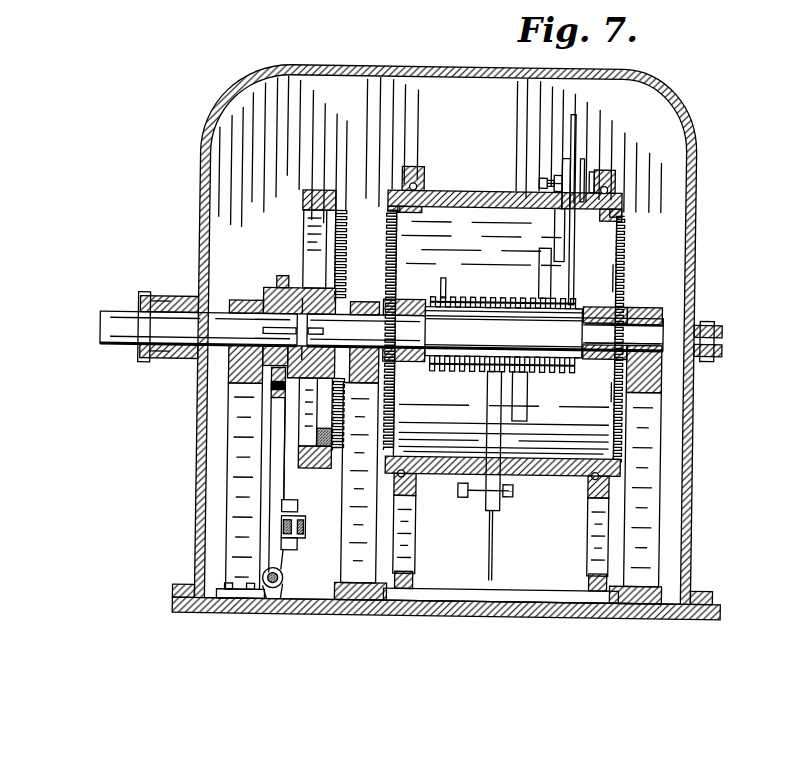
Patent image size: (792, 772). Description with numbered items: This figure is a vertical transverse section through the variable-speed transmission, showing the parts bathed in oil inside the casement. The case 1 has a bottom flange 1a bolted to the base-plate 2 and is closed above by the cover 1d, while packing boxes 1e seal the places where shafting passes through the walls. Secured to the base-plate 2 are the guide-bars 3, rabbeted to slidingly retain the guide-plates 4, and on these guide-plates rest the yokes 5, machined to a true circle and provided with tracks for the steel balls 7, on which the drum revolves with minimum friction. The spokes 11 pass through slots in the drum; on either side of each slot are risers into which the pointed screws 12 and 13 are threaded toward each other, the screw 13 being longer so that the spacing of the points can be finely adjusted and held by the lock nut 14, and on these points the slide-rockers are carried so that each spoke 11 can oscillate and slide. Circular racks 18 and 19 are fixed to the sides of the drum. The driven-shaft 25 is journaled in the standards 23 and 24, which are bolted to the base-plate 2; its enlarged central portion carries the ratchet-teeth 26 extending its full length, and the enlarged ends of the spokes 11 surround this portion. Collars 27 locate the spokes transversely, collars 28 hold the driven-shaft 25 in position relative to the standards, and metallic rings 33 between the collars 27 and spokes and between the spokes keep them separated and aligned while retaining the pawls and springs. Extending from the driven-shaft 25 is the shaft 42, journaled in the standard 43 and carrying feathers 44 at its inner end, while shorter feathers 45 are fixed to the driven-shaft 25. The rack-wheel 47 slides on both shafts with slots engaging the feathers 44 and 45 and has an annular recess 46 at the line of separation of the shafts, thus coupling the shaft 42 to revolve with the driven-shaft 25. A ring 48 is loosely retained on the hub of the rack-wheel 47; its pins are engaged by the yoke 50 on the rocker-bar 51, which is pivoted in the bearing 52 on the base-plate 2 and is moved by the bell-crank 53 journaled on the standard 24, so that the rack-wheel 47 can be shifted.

The case 1 is at (694, 422).
The bottom flange 1a is at (716, 601).
The cover 1d is at (694, 178).
The packing box 1e is at (147, 300).
The base-plate 2 is at (483, 617).
The guide-bar 3 is at (350, 601).
The guide-plate 4 is at (518, 600).
The yoke 5 is at (614, 174).
The steel ball 7 is at (423, 180).
The spoke 11 is at (568, 131).
The screw 12 is at (592, 172).
The screw 13 is at (537, 180).
The lock nut 14 is at (547, 168).
The circular rack 18 is at (623, 229).
The circular rack 19 is at (387, 285).
The standard 23 is at (650, 531).
The standard 24 is at (360, 540).
The driven-shaft 25 is at (400, 310).
The ratchet-teeth 26 is at (541, 341).
The collar 27 is at (618, 274).
The collar 28 is at (628, 308).
The metallic ring 33 is at (460, 298).
The shaft 42 is at (117, 316).
The standard 43 is at (237, 456).
The feather 44 is at (257, 306).
The feather 45 is at (347, 282).
The annular recess 46 is at (300, 300).
The rack-wheel 47 is at (310, 445).
The ring 48 is at (277, 283).
The yoke 50 is at (273, 398).
The rocker-bar 51 is at (275, 500).
The bearing 52 is at (268, 593).
The bell-crank 53 is at (307, 522).